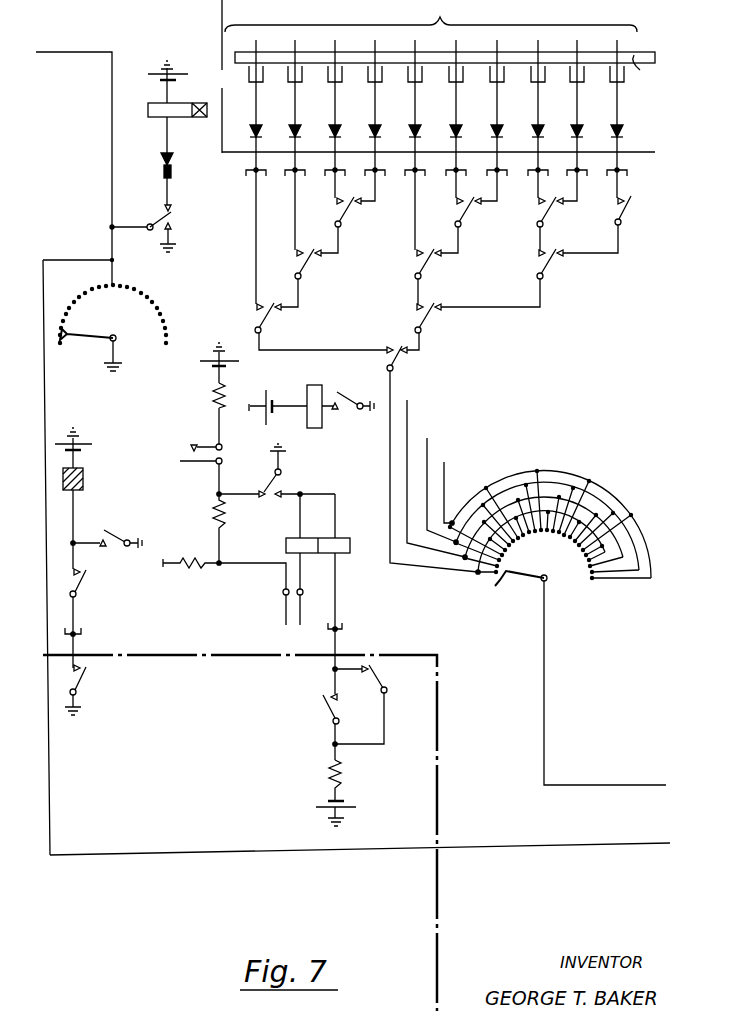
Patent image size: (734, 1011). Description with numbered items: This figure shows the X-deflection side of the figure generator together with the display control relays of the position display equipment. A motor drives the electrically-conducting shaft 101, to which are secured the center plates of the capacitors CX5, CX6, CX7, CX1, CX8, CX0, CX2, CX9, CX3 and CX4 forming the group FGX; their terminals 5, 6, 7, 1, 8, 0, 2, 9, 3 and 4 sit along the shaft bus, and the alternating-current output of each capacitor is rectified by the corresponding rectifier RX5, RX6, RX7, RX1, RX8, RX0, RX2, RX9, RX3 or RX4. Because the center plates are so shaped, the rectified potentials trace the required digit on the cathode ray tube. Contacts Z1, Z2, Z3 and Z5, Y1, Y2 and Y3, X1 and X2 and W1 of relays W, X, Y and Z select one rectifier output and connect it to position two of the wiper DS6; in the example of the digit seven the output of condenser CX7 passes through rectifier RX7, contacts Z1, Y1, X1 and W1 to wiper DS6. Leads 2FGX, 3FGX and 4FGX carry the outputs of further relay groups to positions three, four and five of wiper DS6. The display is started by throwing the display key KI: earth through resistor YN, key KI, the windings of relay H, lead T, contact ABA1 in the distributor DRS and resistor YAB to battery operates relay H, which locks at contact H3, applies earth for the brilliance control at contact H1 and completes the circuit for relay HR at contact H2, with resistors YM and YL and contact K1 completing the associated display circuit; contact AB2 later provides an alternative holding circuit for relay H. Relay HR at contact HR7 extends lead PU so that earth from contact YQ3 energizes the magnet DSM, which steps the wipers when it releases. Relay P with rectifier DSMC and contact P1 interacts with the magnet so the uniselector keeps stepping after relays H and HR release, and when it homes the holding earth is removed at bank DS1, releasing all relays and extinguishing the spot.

The electrically-conducting shaft 101 is at (647, 70).
The figure generator X section FGX is at (438, 76).
The figure generator terminal 5 is at (249, 43).
The figure generator terminal 6 is at (288, 43).
The figure generator terminal 7 is at (328, 43).
The figure generator terminal 1 is at (368, 43).
The figure generator terminal 8 is at (408, 43).
The figure generator terminal 0 is at (449, 43).
The figure generator terminal 2 is at (490, 43).
The figure generator terminal 9 is at (531, 43).
The figure generator terminal 3 is at (570, 43).
The figure generator terminal 4 is at (610, 43).
The capacitor CX5 is at (247, 114).
The capacitor CX6 is at (286, 114).
The capacitor CX7 is at (326, 114).
The capacitor CX1 is at (366, 114).
The capacitor CX8 is at (406, 114).
The capacitor CX0 is at (447, 114).
The capacitor CX2 is at (488, 114).
The capacitor CX9 is at (529, 114).
The capacitor CX3 is at (568, 114).
The capacitor CX4 is at (608, 114).
The rectifier RX5 is at (245, 139).
The rectifier RX6 is at (284, 139).
The rectifier RX7 is at (324, 139).
The rectifier RX1 is at (364, 139).
The rectifier RX8 is at (404, 139).
The rectifier RX0 is at (445, 139).
The rectifier RX2 is at (486, 139).
The rectifier RX9 is at (527, 139).
The rectifier RX3 is at (566, 139).
The rectifier RX4 is at (606, 139).
The contact Z1 is at (355, 201).
The contact Z2 is at (476, 201).
The contact Z3 is at (557, 201).
The contact Z5 is at (600, 214).
The contact Y1 is at (316, 227).
The contact Y2 is at (436, 227).
The contact Y3 is at (550, 253).
The contact X1 is at (321, 263).
The contact X2 is at (473, 314).
The contact W1 is at (395, 350).
The relay P is at (136, 102).
The rectifier DSMC is at (147, 179).
The contact H1 is at (153, 228).
The bank DS1 is at (113, 314).
The resistor YL is at (212, 393).
The contact K1 is at (189, 469).
The relay HR is at (298, 379).
The contact H2 is at (348, 408).
The contact H3 is at (276, 479).
The resistor YM is at (206, 529).
The resistor YN is at (226, 583).
The relay H is at (372, 544).
The display key KI is at (307, 589).
The lead T is at (339, 611).
The distributor DRS is at (356, 833).
The magnet DSM is at (122, 483).
The contact P1 is at (106, 534).
The contact HR7 is at (91, 588).
The lead PU is at (81, 648).
The contact YQ3 is at (88, 690).
The contact ABA1 is at (373, 703).
The contact AB2 is at (313, 714).
The resistor YAB is at (344, 793).
The lead 2FGX is at (443, 472).
The lead 3FGX is at (437, 479).
The lead 4FGX is at (446, 491).
The wiper DS6 is at (557, 627).